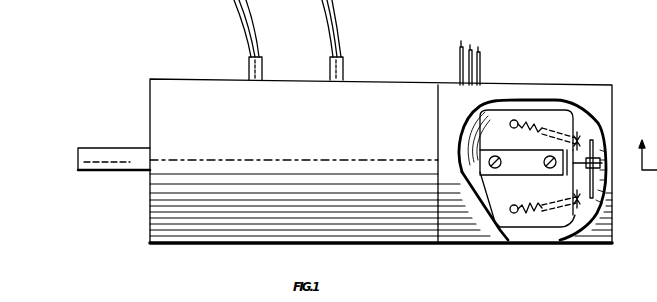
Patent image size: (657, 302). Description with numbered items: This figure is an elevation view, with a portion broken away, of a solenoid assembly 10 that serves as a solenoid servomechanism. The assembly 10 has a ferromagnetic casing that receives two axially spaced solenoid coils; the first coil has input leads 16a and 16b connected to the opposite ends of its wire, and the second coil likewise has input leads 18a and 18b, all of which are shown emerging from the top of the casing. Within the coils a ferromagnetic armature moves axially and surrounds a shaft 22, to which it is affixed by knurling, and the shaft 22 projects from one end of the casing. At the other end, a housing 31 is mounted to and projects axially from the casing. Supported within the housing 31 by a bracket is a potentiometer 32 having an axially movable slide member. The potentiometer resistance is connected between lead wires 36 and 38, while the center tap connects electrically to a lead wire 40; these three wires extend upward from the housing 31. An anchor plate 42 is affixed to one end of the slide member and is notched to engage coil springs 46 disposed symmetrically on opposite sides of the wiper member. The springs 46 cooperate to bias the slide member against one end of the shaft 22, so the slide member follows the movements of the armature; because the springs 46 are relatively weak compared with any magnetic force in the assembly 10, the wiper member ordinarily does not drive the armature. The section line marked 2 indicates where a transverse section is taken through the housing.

The solenoid assembly 10 is at (398, 72).
The shaft 22 is at (97, 148).
The input lead 16a is at (246, 35).
The input lead 16b is at (256, 27).
The input lead 18a is at (331, 39).
The input lead 18b is at (341, 24).
The lead wire 36 is at (459, 60).
The lead wire 40 is at (472, 46).
The lead wire 38 is at (482, 62).
The housing 31 is at (570, 85).
The potentiometer 32 is at (498, 212).
The anchor plate 42 is at (600, 190).
The coil springs 46 is at (550, 214).
The section line 2 is at (642, 159).